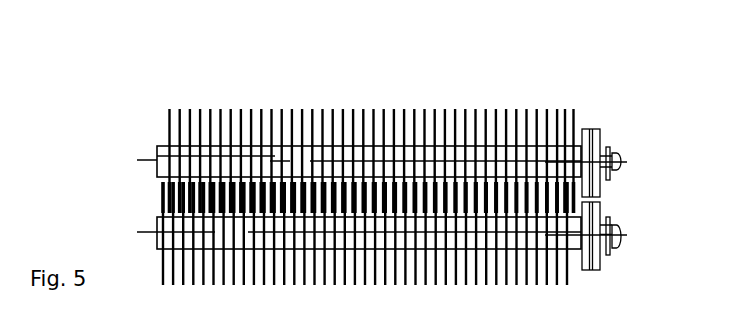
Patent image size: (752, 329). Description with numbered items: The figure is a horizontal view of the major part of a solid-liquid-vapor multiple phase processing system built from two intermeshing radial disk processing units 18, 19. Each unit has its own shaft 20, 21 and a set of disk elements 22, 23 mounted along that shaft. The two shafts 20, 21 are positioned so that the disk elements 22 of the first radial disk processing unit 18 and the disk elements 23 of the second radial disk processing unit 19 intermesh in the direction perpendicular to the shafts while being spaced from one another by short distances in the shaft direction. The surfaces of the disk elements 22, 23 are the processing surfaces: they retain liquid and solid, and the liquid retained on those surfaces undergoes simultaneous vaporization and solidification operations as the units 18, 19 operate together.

The radial disk processing unit 18 is at (168, 125).
The radial disk processing unit 19 is at (162, 270).
The shaft 20 is at (158, 158).
The shaft 21 is at (157, 228).
The disk elements 22 is at (373, 117).
The disk elements 23 is at (372, 281).